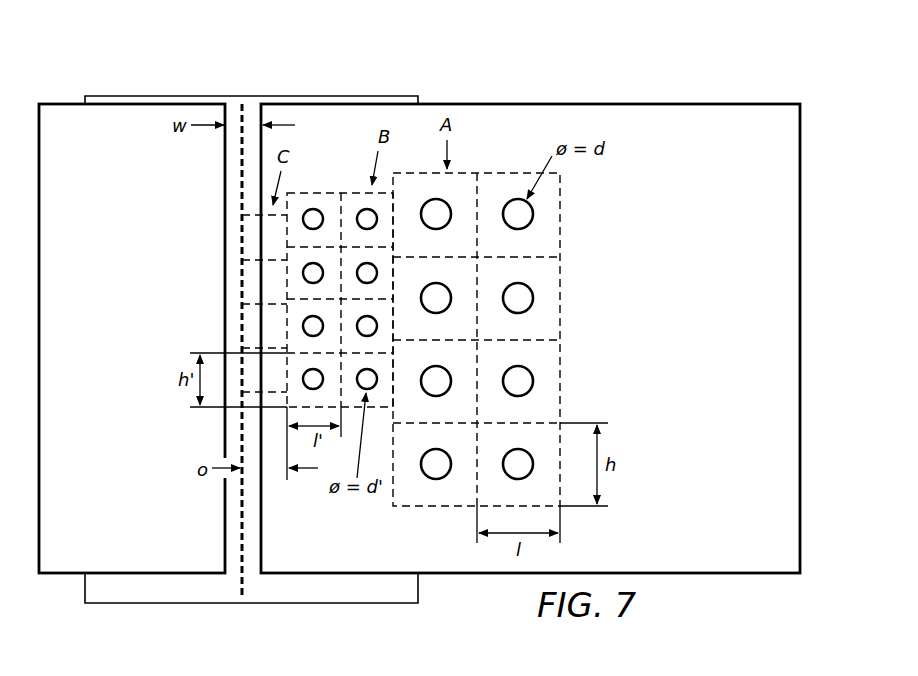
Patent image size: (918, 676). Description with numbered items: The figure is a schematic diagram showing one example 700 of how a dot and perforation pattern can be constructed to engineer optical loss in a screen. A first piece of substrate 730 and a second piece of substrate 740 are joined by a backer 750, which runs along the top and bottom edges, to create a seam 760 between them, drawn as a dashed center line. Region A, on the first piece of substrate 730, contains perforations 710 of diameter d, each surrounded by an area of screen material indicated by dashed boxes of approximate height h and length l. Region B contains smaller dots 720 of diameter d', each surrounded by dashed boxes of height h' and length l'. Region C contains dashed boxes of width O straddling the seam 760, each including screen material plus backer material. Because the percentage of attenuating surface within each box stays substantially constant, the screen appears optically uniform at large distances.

The example 700 is at (521, 66).
The perforations 710 is at (525, 312).
The dots 720 is at (363, 213).
The first piece of substrate 730 is at (659, 114).
The second piece of substrate 740 is at (62, 115).
The backer 750 is at (140, 597).
The seam 760 is at (258, 86).